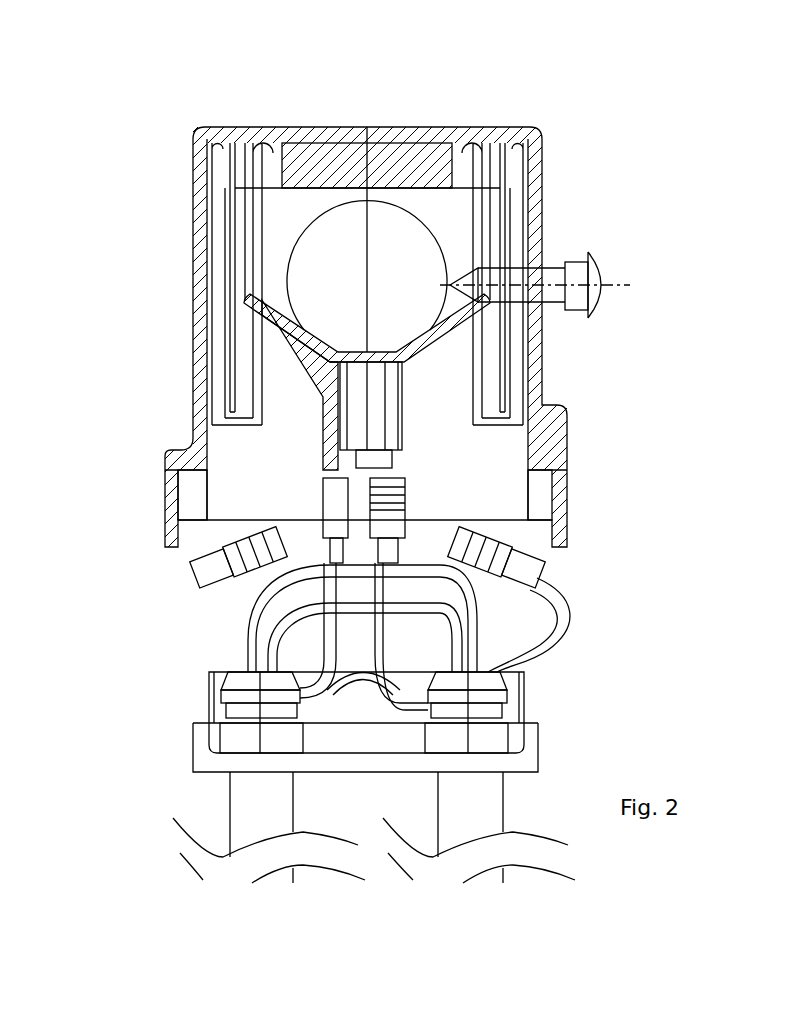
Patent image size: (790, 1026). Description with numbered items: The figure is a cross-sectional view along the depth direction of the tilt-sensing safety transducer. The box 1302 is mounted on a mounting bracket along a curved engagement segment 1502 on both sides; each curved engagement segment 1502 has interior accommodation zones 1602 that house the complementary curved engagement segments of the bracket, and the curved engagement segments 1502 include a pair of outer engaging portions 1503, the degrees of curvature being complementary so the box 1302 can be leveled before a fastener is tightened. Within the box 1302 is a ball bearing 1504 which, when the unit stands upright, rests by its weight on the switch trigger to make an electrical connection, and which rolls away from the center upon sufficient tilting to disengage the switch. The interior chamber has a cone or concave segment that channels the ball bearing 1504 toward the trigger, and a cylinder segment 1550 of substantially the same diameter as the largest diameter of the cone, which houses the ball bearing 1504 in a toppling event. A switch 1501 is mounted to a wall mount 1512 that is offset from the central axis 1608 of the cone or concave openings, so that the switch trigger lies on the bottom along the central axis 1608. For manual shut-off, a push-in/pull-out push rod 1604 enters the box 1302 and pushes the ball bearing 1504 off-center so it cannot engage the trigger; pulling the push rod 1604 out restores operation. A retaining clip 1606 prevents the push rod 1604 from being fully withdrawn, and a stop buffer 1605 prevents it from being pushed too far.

The box 1302 is at (203, 128).
The central axis 1608 is at (367, 127).
The ball bearing 1504 is at (325, 262).
The cylinder segment 1550 is at (277, 265).
The retaining clip 1606 is at (450, 285).
The push rod 1604 is at (598, 270).
The stop buffer 1605 is at (580, 300).
The switch 1501 is at (383, 386).
The wall mount 1512 is at (332, 420).
The curved engagement segment 1502 is at (567, 445).
The outer engaging portions 1503 is at (178, 534).
The interior accommodation zones 1602 is at (538, 482).